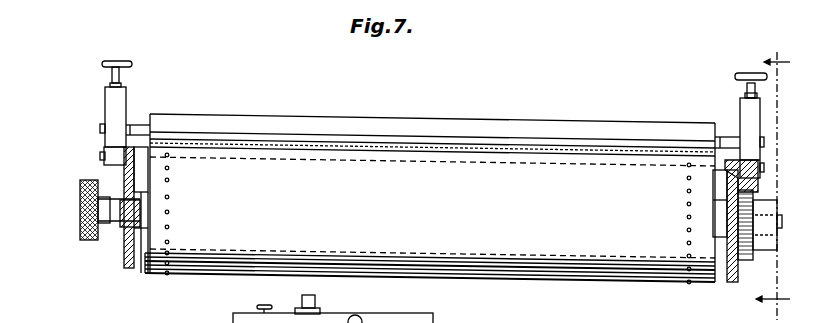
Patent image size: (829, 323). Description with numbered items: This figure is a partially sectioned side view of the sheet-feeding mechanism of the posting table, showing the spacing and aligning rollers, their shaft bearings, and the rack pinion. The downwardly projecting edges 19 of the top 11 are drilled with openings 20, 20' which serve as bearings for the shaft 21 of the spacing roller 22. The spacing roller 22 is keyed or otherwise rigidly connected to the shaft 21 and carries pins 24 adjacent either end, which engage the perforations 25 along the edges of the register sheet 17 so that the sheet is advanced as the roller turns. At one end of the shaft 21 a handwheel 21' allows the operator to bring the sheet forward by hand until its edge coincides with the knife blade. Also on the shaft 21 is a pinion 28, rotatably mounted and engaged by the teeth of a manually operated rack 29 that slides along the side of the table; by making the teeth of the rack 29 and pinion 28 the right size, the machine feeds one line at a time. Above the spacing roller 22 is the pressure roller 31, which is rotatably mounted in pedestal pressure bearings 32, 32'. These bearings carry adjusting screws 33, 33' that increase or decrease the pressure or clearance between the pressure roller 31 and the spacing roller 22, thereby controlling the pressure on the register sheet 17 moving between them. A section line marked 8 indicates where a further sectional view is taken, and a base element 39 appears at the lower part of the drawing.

The section line 8- 8 is at (773, 176).
The top 11 is at (723, 167).
The register sheet 17 is at (586, 152).
The downwardly projecting edges 19 is at (125, 262).
The drilled opening 20 is at (714, 242).
The drilled opening 20' is at (140, 229).
The shaft 21 is at (109, 234).
The handwheel 21' is at (65, 210).
The spacing roller 22 is at (585, 276).
The pins 24 is at (166, 274).
The perforations 25 is at (175, 149).
The pinion 28 is at (755, 215).
The rack 29 is at (778, 180).
The pressure roller 31 is at (538, 132).
The pedestal pressure bearing 32 is at (726, 138).
The pedestal pressure bearing 32' is at (99, 126).
The adjusting screw 33 is at (727, 85).
The adjusting screw 33' is at (91, 74).
The base 39 is at (346, 320).